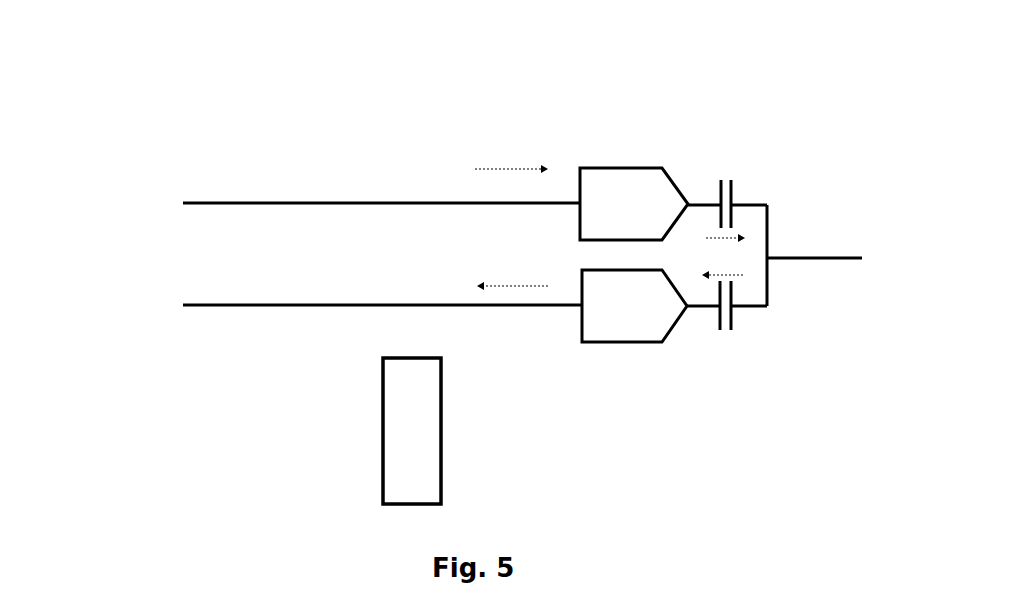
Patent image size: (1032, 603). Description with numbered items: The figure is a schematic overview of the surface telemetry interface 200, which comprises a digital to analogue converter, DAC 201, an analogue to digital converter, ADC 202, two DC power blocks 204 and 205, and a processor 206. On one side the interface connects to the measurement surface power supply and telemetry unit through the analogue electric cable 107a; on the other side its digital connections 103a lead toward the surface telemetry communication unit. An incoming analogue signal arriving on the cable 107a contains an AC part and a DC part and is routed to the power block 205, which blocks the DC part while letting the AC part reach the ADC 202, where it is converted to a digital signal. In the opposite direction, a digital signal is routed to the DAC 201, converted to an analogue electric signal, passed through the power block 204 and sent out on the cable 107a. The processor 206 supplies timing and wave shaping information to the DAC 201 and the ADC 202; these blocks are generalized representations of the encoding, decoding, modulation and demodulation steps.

The surface telemetry interface 200 is at (203, 112).
The transducer element connections 103a is at (170, 167).
The digital to analogue converter (DAC) 201 is at (622, 159).
The analogue to digital converter (ADC) 202 is at (630, 345).
The DC power block 204 is at (727, 177).
The DC power block 205 is at (731, 335).
The electric cable 107a is at (846, 255).
The processor 206 is at (453, 417).